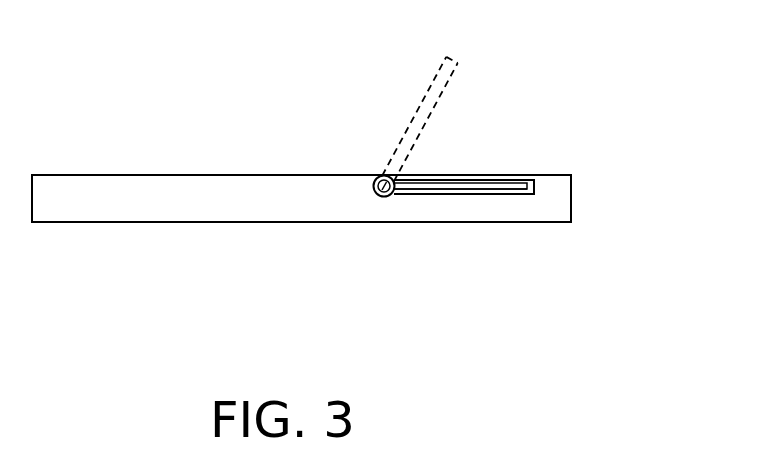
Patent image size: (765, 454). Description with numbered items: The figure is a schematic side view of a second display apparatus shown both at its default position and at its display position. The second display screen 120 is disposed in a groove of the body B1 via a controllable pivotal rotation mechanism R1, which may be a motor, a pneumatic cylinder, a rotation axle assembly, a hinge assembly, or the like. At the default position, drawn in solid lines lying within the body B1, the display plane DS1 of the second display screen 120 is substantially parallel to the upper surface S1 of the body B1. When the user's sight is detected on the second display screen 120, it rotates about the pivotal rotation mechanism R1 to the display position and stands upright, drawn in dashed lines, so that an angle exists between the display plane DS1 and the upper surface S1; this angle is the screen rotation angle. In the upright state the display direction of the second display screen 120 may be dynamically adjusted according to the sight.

The display plane DS1 is at (513, 173).
The second display screen 120 is at (505, 191).
The controllable pivotal rotation mechanism R1 is at (381, 197).
The upper surface S1 is at (552, 173).
The body B1 is at (553, 224).